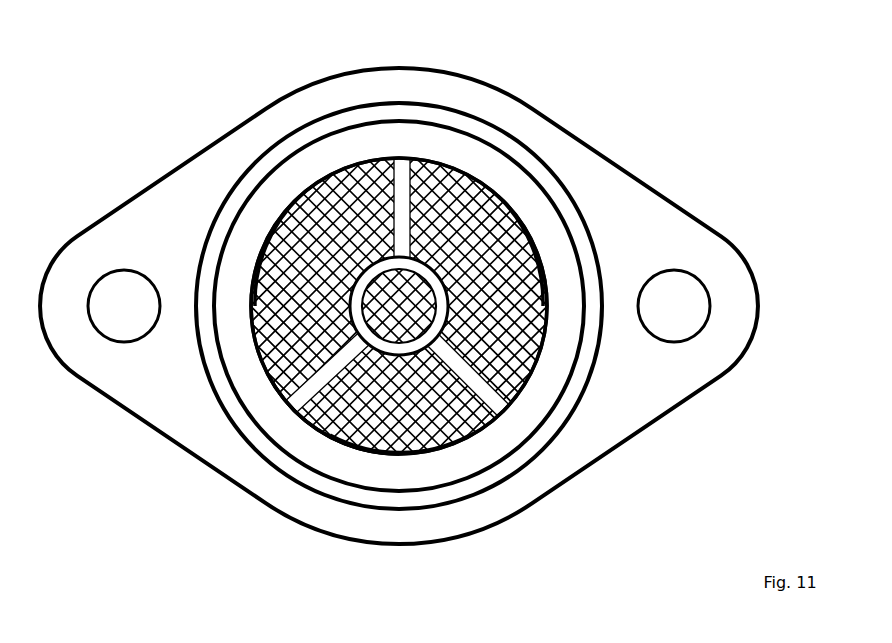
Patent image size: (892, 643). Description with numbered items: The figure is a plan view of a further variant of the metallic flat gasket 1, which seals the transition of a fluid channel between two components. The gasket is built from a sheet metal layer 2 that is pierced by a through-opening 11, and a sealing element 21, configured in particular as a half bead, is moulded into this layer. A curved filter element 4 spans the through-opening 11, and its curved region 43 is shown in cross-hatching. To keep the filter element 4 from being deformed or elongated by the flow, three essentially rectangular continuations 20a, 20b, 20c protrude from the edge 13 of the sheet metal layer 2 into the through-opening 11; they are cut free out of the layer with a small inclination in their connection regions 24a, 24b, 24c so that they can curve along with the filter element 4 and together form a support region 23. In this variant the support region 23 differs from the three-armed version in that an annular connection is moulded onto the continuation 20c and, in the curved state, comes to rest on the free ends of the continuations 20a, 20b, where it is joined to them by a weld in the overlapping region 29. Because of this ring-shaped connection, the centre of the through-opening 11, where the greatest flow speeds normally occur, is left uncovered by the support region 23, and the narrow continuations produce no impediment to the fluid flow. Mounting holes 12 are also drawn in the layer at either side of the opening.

The metallic flat gasket 1 is at (130, 112).
The sheet metal layer 2 is at (635, 375).
The filter element 4 is at (270, 237).
The through-opening 11 is at (258, 333).
The mounting holes 12 is at (112, 305).
The edge 13 is at (375, 454).
The continuation 20a is at (304, 391).
The continuation 20b is at (467, 170).
The continuation 20c is at (470, 352).
The sealing element 21 is at (588, 368).
The support region 23 is at (437, 345).
The connection region 24a is at (296, 406).
The connection region 24b is at (402, 156).
The connection region 24c is at (500, 407).
The overlapping region 29 is at (342, 278).
The curved region 43 is at (398, 355).